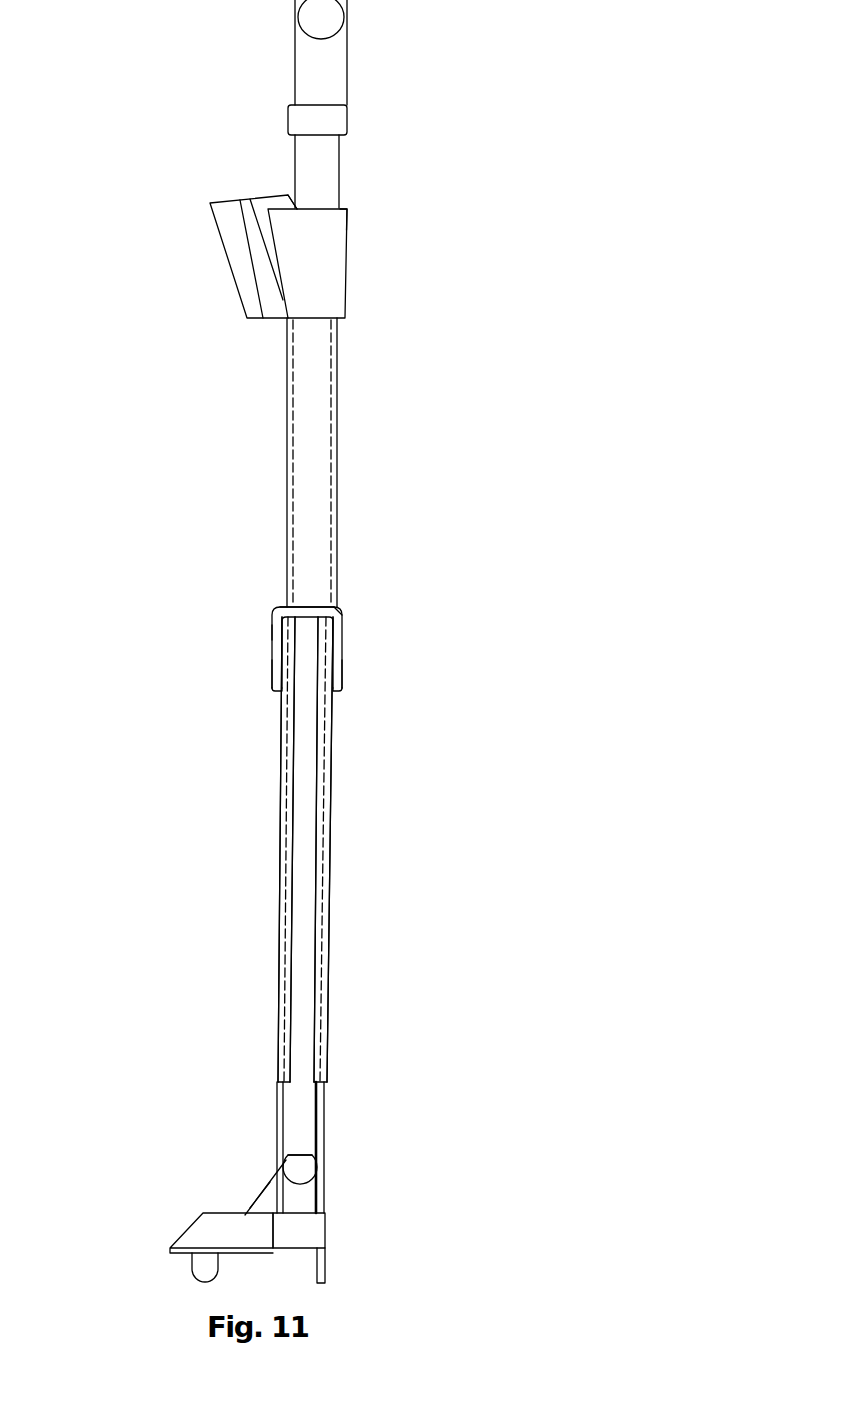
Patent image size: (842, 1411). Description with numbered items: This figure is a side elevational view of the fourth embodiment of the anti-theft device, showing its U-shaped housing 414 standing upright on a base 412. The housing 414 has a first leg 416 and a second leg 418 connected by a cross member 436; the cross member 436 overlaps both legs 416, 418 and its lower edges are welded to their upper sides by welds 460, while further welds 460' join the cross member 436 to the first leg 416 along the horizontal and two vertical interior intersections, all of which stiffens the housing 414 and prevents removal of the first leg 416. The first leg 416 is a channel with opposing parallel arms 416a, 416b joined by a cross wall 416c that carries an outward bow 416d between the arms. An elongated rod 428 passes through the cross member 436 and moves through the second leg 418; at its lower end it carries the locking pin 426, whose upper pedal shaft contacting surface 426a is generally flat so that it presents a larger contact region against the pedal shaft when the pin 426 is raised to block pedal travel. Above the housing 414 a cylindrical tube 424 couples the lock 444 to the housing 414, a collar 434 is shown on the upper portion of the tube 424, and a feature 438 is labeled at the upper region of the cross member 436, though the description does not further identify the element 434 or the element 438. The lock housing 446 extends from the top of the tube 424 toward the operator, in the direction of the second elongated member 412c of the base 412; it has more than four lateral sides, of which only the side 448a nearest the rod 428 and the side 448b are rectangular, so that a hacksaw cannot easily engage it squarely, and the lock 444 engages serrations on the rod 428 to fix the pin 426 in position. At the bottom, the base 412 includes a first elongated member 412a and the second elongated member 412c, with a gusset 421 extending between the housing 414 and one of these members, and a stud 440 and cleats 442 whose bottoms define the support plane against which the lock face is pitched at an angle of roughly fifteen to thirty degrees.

The base 412 is at (178, 1228).
The first elongated member 412a is at (317, 1222).
The second elongated member 412c is at (244, 1213).
The U-shaped housing 414 is at (297, 849).
The first leg 416 is at (308, 883).
The arm 416a is at (283, 868).
The arm 416b is at (332, 832).
The cross wall 416c is at (323, 920).
The outward bow 416d is at (303, 828).
The second leg 418 is at (325, 1113).
The gusset 421 is at (257, 1203).
The cylindrical tube 424 is at (337, 467).
The locking pin 426 is at (305, 1172).
The pedal shaft contacting surface 426a is at (297, 1159).
The rod 428 is at (328, 173).
The collar 434 is at (340, 118).
The cross member 436 is at (358, 640).
The clip top 438 is at (335, 605).
The stud 440 is at (190, 1267).
The cleats 442 is at (325, 1272).
The lock 444 is at (214, 266).
The lock housing 446 is at (327, 263).
The lateral side 448a is at (293, 203).
The lateral side 448b is at (348, 222).
The welds 460 is at (296, 692).
The welds 460' is at (228, 588).